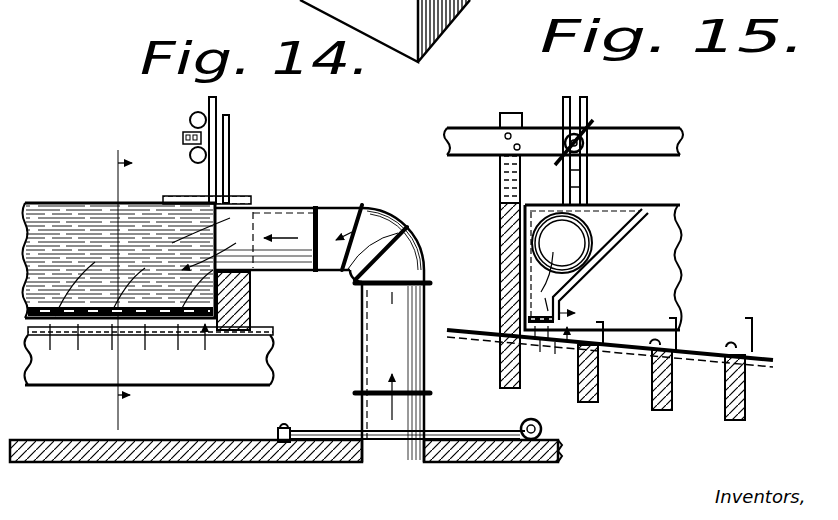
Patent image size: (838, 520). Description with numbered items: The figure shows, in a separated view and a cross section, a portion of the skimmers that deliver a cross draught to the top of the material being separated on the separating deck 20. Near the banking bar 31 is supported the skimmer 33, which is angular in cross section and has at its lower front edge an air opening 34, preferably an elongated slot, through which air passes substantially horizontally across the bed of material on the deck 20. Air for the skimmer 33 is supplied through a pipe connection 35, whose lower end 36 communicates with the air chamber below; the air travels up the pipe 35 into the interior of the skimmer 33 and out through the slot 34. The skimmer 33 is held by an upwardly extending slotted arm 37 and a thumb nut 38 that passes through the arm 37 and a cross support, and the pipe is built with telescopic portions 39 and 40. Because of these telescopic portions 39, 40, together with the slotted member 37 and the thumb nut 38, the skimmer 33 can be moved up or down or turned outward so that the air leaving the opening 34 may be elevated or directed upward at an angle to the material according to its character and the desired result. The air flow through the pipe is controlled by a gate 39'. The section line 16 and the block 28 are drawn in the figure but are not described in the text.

In FIG. 14, the section line 16 is at (115, 287).
In FIG. 14, the separating deck 20 is at (149, 360).
In FIG. 15, the separating deck 20 is at (700, 347).
In FIG. 14, the cross tie / bearing block 28 is at (150, 352).
In FIG. 15, the cross tie / bearing block 28 is at (654, 402).
In FIG. 15, the banking bar 31 is at (503, 262).
In FIG. 14, the skimmer 33 is at (45, 213).
In FIG. 15, the skimmer 33 is at (680, 212).
In FIG. 14, the air opening 34 is at (215, 312).
In FIG. 15, the air opening 34 is at (562, 314).
In FIG. 14, the pipe connection 35 is at (357, 255).
In FIG. 14, the lower end of pipe 36 is at (418, 470).
In FIG. 14, the slotted arm 37 is at (232, 163).
In FIG. 15, the slotted arm 37 is at (590, 178).
In FIG. 14, the thumb nut 38 is at (193, 125).
In FIG. 15, the thumb nut 38 is at (598, 140).
In FIG. 14, the telescopic portion of pipe 39 is at (367, 366).
In FIG. 14, the gate 39' is at (409, 418).
In FIG. 14, the telescopic portion of pipe 40 is at (307, 202).
In FIG. 15, the telescopic portion of pipe 40 is at (590, 255).